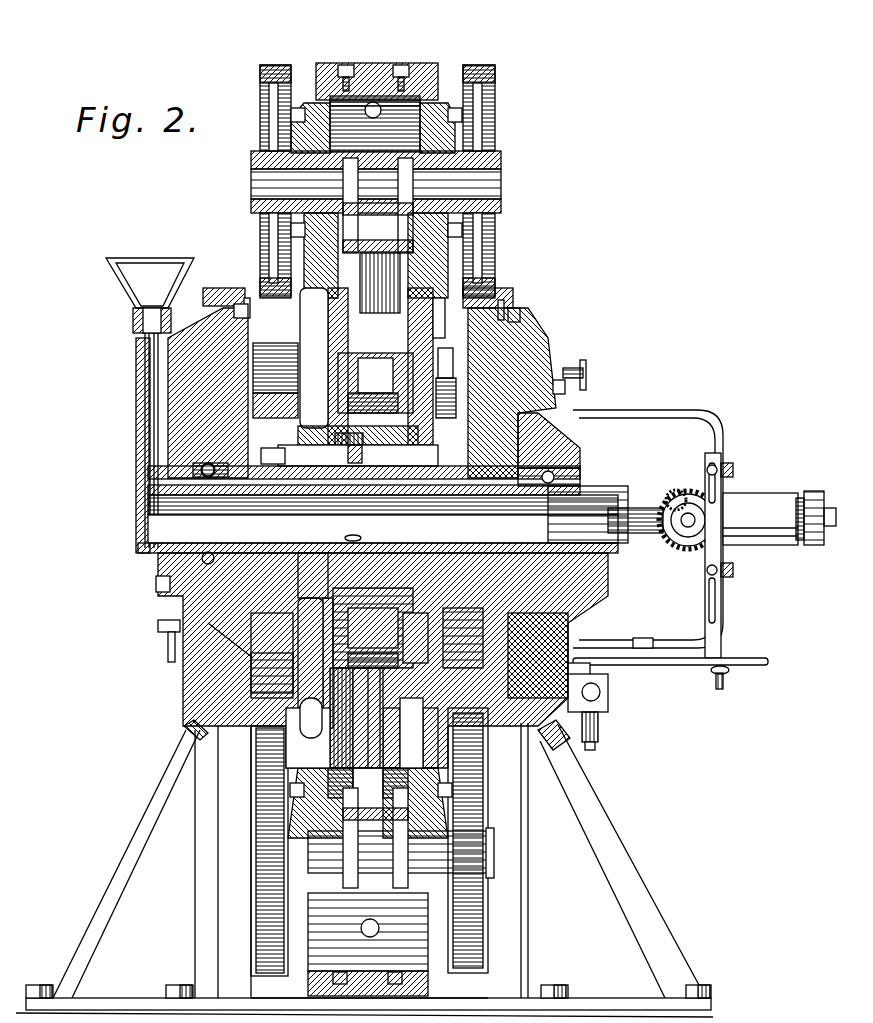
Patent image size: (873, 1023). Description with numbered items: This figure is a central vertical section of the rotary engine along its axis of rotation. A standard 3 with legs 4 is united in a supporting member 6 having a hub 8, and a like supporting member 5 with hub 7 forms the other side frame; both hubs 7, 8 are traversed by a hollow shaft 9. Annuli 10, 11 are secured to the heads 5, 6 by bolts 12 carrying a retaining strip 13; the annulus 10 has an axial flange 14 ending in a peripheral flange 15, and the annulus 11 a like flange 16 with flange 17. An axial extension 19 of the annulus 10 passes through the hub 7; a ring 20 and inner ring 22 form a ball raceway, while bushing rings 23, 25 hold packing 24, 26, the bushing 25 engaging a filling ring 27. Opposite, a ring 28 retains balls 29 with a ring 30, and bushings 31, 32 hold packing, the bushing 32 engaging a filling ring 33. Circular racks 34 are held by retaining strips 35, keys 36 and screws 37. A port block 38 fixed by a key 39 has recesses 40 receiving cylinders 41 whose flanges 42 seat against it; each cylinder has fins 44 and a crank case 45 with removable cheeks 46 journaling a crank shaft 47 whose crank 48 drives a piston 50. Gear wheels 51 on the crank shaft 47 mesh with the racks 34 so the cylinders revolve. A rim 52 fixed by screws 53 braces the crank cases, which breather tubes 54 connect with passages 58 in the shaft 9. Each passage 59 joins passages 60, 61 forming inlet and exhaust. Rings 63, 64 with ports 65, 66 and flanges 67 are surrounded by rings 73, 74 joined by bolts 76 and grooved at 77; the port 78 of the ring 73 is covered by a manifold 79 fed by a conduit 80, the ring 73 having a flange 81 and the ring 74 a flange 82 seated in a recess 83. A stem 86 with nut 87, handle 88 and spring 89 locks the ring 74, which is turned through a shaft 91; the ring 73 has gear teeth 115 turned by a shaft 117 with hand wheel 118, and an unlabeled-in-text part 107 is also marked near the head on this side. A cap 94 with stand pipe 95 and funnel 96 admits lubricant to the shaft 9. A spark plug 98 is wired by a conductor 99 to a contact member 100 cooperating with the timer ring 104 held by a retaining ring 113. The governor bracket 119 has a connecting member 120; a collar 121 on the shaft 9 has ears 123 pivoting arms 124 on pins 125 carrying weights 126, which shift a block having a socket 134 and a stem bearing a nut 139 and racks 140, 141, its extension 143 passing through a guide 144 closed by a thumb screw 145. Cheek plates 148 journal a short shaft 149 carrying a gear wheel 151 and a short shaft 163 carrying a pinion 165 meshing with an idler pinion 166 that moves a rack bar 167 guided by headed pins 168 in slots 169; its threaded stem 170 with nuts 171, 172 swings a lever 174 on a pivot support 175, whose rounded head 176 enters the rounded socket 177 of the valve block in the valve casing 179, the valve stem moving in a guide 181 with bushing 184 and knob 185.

The standard 3 is at (364, 873).
The legs 4 is at (379, 861).
The supporting member 5 is at (560, 742).
The supporting member 6 is at (186, 725).
The hub 7 is at (555, 615).
The hub 8 is at (165, 600).
The hollow shaft 9 is at (130, 540).
The annulus 10 is at (500, 322).
The annulus 11 is at (230, 350).
The bolts 12 is at (232, 722).
The retaining strip 13 is at (185, 770).
The flange 14 is at (480, 292).
The peripheral flange 15 is at (432, 742).
The flange 16 is at (270, 682).
The flange 17 is at (290, 725).
The axial extension 19 is at (572, 456).
The ring 20 is at (560, 512).
The ring 22 is at (572, 465).
The bushing ring 23 is at (548, 471).
The packing 24 is at (608, 567).
The bushing ring 25 is at (608, 585).
The packing 26 is at (508, 545).
The filling ring 27 is at (500, 494).
The ring 28 is at (195, 455).
The balls 29 is at (200, 455).
The ring 30 is at (215, 535).
The bushing 31 is at (140, 478).
The bushing 32 is at (205, 548).
The filling ring 33 is at (262, 540).
The circular rack 34 is at (240, 268).
The retaining strip 35 is at (228, 305).
The key 36 is at (218, 330).
The screws 37 is at (236, 292).
The port block 38 is at (322, 545).
The key 39 is at (395, 545).
The recess 40 is at (356, 446).
The cylinder 41 is at (312, 290).
The flange 42 is at (316, 506).
The heat radiating fins 44 is at (313, 508).
The crank case 45 is at (415, 98).
The removable cheeks 46 is at (300, 142).
The crank shaft 47 is at (493, 170).
The crank 48 is at (392, 165).
The piston 50 is at (375, 355).
The gear wheel 51 is at (268, 57).
The rim 52 is at (315, 55).
The screws 53 is at (393, 57).
The breather tubes 54 is at (405, 70).
The passages 58 is at (370, 514).
The passage 59 is at (350, 529).
The passage 60 is at (425, 545).
The passage 61 is at (302, 540).
The intake-port ring 63 is at (548, 430).
The exhaust-port ring 64 is at (160, 578).
The ports 65 is at (551, 372).
The ports 66 is at (273, 456).
The flanges 67 is at (578, 362).
The ring 73 is at (593, 650).
The ring 74 is at (262, 410).
The bolts 76 is at (273, 667).
The grooves 77 is at (570, 612).
The port 78 is at (452, 618).
The manifold 79 is at (473, 666).
The conduit 80 is at (600, 690).
The radial peripheral flange 81 is at (584, 658).
The flange 82 is at (167, 652).
The recess 83 is at (205, 650).
The stem 86 is at (150, 620).
The nut 87 is at (160, 636).
The manipulating handle 88 is at (170, 642).
The spring 89 is at (275, 368).
The shaft 91 is at (446, 512).
The cap 94 is at (128, 510).
The stand pipe 95 is at (137, 380).
The filling funnel 96 is at (125, 268).
The spark plug 98 is at (418, 527).
The conductor 99 is at (373, 528).
The contact member 100 is at (370, 305).
The timer ring 104 is at (476, 785).
The flange 107 is at (532, 345).
The retaining ring 113 is at (414, 320).
The gear teeth 115 is at (412, 300).
The shaft 117 is at (578, 376).
The hand wheel 118 is at (580, 386).
The bracket 119 is at (635, 402).
The connecting portion 120 is at (715, 432).
The collar 121 is at (641, 562).
The ears 123 is at (612, 512).
The arm 124 is at (655, 470).
The pivot pin 125 is at (618, 522).
The weight 126 is at (688, 520).
The socket 134 is at (637, 520).
The nut 139 is at (660, 532).
The rack 140 is at (668, 482).
The rack 141 is at (658, 580).
The extension 143 is at (818, 537).
The guide 144 is at (760, 519).
The thumb screw 145 is at (806, 483).
The cheek plate extensions 148 is at (698, 580).
The short shaft 149 is at (408, 529).
The gear wheel 151 is at (703, 445).
The short shaft 163 is at (675, 538).
The pinion 165 is at (715, 530).
The idler pinion 166 is at (735, 492).
The rack bar 167 is at (710, 458).
The headed pins 168 is at (725, 460).
The slots 169 is at (713, 472).
The threaded stem 170 is at (712, 681).
The nut 171 is at (738, 650).
The nut 172 is at (720, 662).
The lever 174 is at (745, 654).
The pivot support 175 is at (636, 630).
The rounded head 176 is at (618, 632).
The rounded socket 177 is at (600, 676).
The valve casing 179 is at (600, 692).
The guide 181 is at (590, 716).
The bushing 184 is at (588, 737).
The knob 185 is at (585, 743).